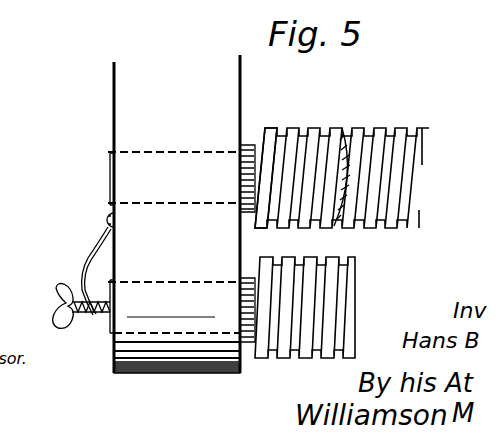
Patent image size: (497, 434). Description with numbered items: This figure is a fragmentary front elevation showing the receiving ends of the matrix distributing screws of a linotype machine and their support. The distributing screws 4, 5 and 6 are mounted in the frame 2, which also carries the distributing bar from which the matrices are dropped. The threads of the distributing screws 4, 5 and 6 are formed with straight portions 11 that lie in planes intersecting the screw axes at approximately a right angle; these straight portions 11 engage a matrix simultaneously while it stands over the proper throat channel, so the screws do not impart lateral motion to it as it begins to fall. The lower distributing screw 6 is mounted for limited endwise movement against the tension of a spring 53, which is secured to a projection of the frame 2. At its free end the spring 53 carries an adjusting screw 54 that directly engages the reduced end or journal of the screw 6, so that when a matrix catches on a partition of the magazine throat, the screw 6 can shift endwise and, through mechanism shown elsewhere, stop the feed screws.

The frame 2 is at (181, 214).
The distributing screw 4 is at (375, 132).
The distributing screw 5 is at (280, 130).
The lower distributing screw 6 is at (293, 262).
The straight portions 11 is at (405, 178).
The spring 53 is at (92, 254).
The adjusting screw 54 is at (56, 290).